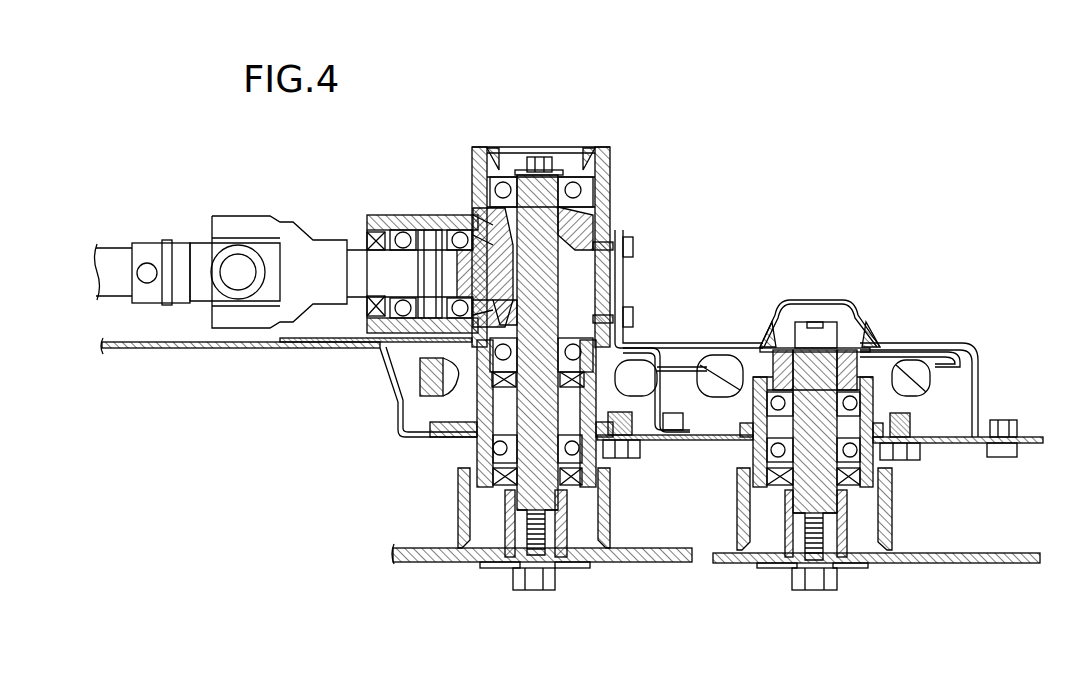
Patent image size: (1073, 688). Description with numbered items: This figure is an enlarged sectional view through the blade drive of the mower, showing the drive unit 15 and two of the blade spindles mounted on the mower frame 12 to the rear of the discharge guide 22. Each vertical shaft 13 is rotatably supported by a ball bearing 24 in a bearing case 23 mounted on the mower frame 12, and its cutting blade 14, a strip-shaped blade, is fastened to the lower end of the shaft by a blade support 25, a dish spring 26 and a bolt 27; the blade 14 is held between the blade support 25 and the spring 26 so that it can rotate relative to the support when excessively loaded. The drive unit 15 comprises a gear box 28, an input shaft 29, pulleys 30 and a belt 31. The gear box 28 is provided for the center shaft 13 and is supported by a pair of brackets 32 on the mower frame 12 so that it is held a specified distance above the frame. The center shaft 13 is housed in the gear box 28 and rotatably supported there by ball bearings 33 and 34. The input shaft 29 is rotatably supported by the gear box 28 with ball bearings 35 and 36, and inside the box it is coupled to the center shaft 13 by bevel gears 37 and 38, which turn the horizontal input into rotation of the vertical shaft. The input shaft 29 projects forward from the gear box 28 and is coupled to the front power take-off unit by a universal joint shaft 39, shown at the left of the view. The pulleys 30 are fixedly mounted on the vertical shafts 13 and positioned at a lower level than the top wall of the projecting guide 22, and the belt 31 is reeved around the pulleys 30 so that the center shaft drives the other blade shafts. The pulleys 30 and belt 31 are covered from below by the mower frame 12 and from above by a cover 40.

The mower frame 12 is at (955, 440).
The vertical shaft 13 is at (545, 493).
The cutting blade 14 is at (443, 562).
The drive unit 15 is at (641, 297).
The discharge guide 22 is at (238, 349).
The bearing case 23 is at (480, 462).
The ball bearing 24 is at (615, 452).
The blade support 25 is at (495, 568).
The dish spring 26 is at (587, 568).
The bolt 27 is at (532, 587).
The gear box 28 is at (632, 258).
The input shaft 29 is at (358, 253).
The pulley 30 is at (398, 402).
The belt 31 is at (733, 353).
The bracket 32 is at (667, 343).
The ball bearing 33 is at (633, 342).
The ball bearing 34 is at (610, 178).
The ball bearing 35 is at (403, 240).
The ball bearing 36 is at (460, 237).
The bevel gear 37 is at (493, 320).
The bevel gear 38 is at (610, 218).
The universal joint shaft 39 is at (112, 257).
The cover 40 is at (910, 343).